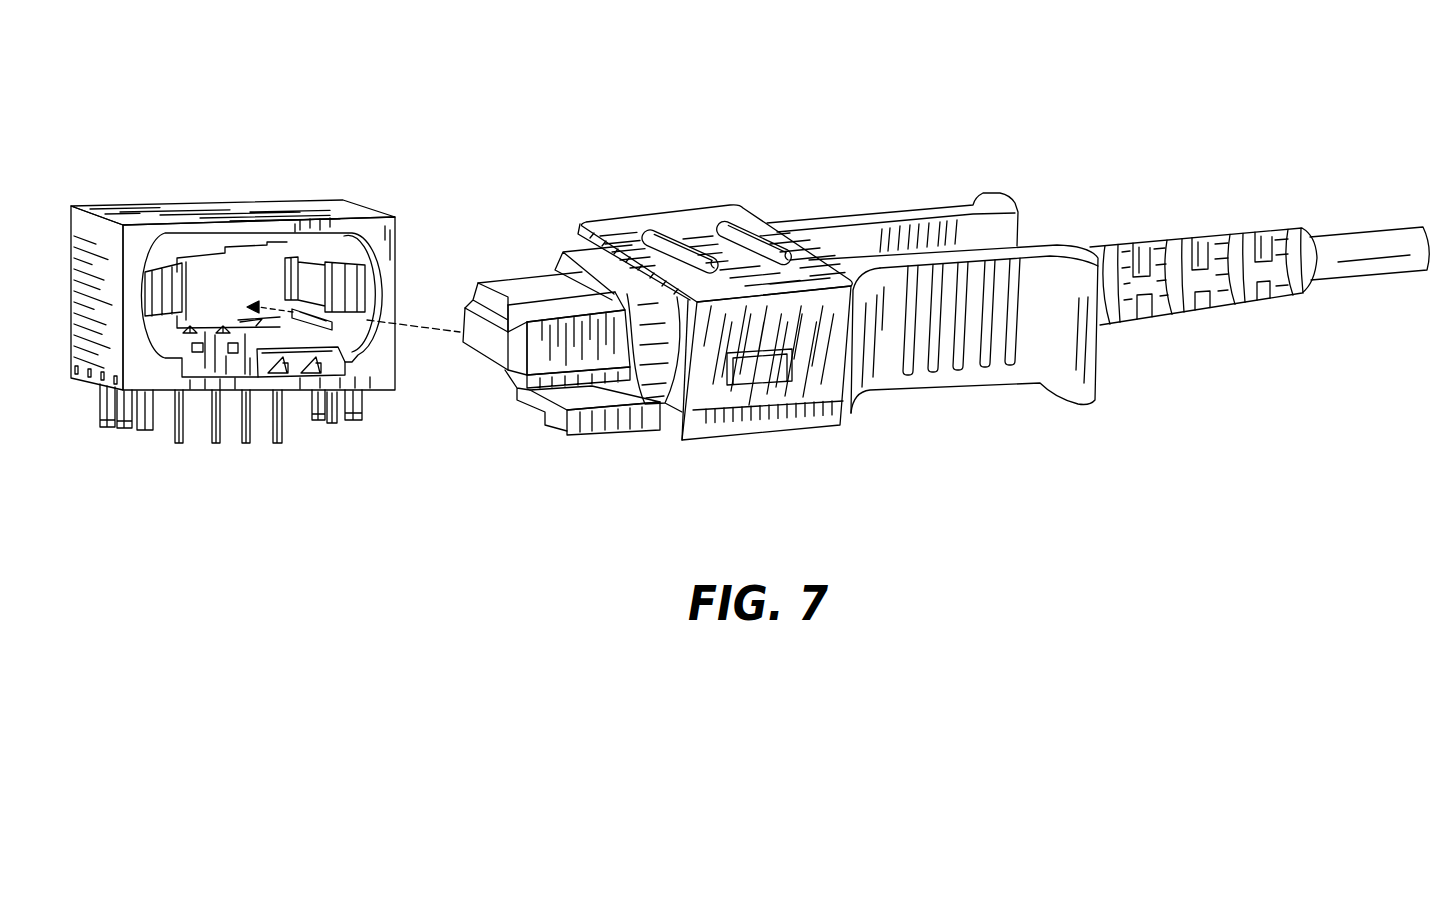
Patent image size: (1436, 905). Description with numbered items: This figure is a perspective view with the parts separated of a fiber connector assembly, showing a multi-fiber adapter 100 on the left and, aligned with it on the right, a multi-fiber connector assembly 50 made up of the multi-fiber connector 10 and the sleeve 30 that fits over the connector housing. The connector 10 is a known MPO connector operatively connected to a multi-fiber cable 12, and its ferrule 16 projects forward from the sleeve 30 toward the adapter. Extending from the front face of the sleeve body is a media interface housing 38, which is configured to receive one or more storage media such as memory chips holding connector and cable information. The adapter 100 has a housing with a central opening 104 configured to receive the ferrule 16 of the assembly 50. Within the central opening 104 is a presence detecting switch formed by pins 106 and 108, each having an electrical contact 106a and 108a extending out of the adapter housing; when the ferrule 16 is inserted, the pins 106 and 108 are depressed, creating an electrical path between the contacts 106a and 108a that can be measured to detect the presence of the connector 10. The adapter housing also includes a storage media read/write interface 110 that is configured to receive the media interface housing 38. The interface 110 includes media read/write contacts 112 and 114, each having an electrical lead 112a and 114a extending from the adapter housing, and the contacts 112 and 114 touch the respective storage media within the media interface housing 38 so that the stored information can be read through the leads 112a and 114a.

The multi-fiber connector 10 is at (769, 330).
The multi-fiber cable 12 is at (1375, 227).
The ferrule 16 is at (500, 373).
The sleeve 30 is at (672, 206).
The media interface housing 38 is at (607, 433).
The multi-fiber connector assembly 50 is at (935, 271).
The multi-fiber adapter 100 is at (338, 179).
The central opening 104 is at (204, 264).
The presence detecting switch pin 106 is at (192, 328).
The presence detecting switch pin 108 is at (223, 328).
The storage media read/write interface 110 is at (335, 340).
The media read/write contact 112 is at (340, 352).
The media read/write contact 114 is at (290, 363).
The electrical contact 106a is at (167, 433).
The electrical contact 108a is at (207, 433).
The electrical lead 114a is at (252, 443).
The electrical lead 112a is at (285, 433).